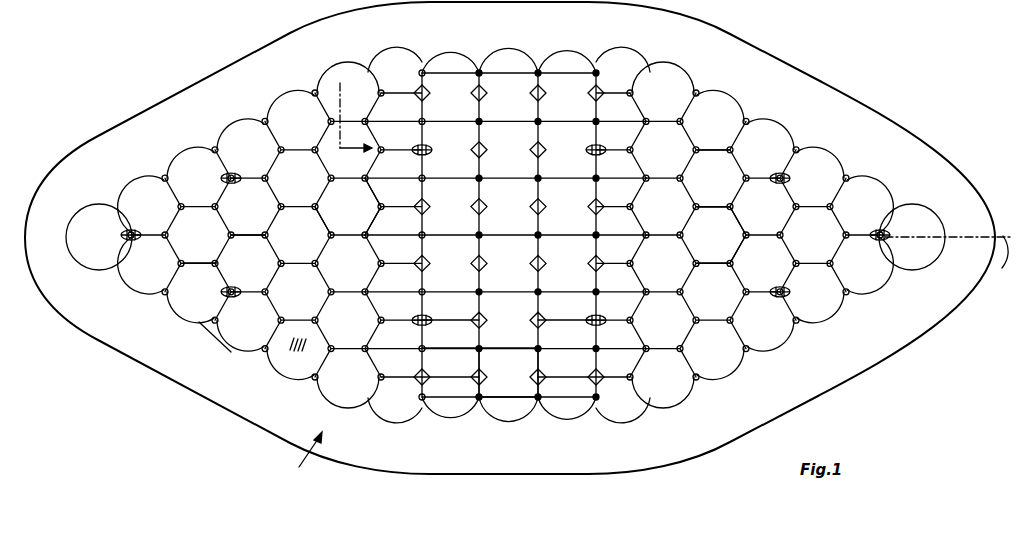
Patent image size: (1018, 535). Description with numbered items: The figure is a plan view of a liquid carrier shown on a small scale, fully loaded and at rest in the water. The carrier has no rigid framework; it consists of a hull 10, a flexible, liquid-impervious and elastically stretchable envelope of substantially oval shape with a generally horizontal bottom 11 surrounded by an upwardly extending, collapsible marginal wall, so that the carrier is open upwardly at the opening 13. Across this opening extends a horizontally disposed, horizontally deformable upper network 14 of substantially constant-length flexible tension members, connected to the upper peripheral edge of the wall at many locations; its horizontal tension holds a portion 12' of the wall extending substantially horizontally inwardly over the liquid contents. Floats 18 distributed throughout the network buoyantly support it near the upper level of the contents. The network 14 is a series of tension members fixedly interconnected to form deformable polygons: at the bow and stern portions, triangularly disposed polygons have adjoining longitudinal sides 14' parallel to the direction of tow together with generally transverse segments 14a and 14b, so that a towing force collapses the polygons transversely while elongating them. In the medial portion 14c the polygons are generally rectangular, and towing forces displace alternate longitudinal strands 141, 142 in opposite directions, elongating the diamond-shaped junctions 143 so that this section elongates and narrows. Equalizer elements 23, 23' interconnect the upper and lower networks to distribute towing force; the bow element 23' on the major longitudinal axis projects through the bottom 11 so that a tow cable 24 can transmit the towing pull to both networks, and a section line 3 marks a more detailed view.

The section line 3- 3 is at (356, 128).
The hull 10 is at (297, 461).
The bottom 11 is at (291, 356).
The portion of the wall 12' is at (510, 238).
The upward opening 13 is at (232, 352).
The upper element or network 14 is at (528, 249).
The adjoining sides 14' is at (456, 226).
The transverse segments 14a is at (737, 221).
The transverse segments 14b is at (739, 247).
The medial portion of the network 14c is at (507, 382).
The floats 18 is at (365, 237).
The equalizer element 23 is at (495, 243).
The equalizer element 23' is at (869, 255).
The tow cable 24 is at (948, 268).
The longitudinal strands 141 is at (470, 378).
The longitudinal strands 142 is at (575, 322).
The diamond-shaped junctions 143 is at (537, 316).